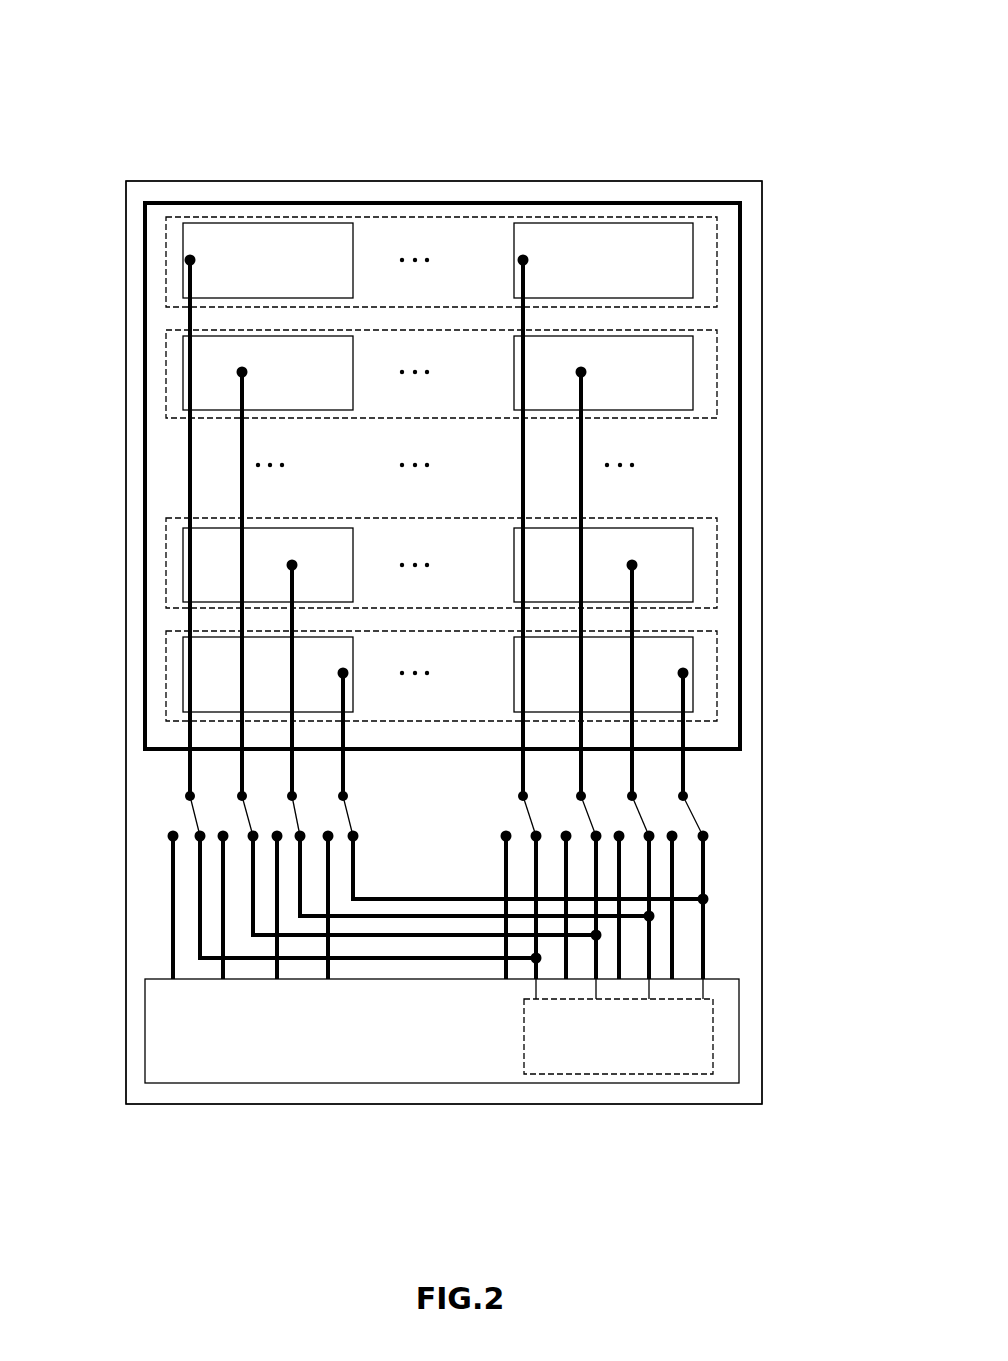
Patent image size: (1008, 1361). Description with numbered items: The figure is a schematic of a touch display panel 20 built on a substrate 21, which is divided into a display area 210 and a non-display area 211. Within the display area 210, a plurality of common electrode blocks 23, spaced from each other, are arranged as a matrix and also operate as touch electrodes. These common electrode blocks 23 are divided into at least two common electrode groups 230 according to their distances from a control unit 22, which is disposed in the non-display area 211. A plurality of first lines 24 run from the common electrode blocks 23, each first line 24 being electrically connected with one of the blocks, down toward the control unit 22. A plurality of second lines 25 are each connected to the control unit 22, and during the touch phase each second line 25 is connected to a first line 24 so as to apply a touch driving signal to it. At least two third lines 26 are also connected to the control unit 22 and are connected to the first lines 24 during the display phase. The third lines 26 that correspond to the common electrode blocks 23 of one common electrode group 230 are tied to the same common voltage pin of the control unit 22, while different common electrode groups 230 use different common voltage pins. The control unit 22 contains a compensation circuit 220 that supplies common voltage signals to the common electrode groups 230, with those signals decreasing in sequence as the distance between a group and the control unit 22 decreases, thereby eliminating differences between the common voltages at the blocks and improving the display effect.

The touch display panel 20 is at (166, 46).
The substrate 21 is at (762, 213).
The display area 210 is at (726, 451).
The non-display area 211 is at (738, 872).
The control unit 22 is at (246, 1056).
The compensation circuit 220 is at (713, 1044).
The common electrode block 23 is at (657, 390).
The common electrode group 230 is at (717, 283).
The first line 24 is at (581, 494).
The second line 25 is at (173, 915).
The third line 26 is at (350, 960).